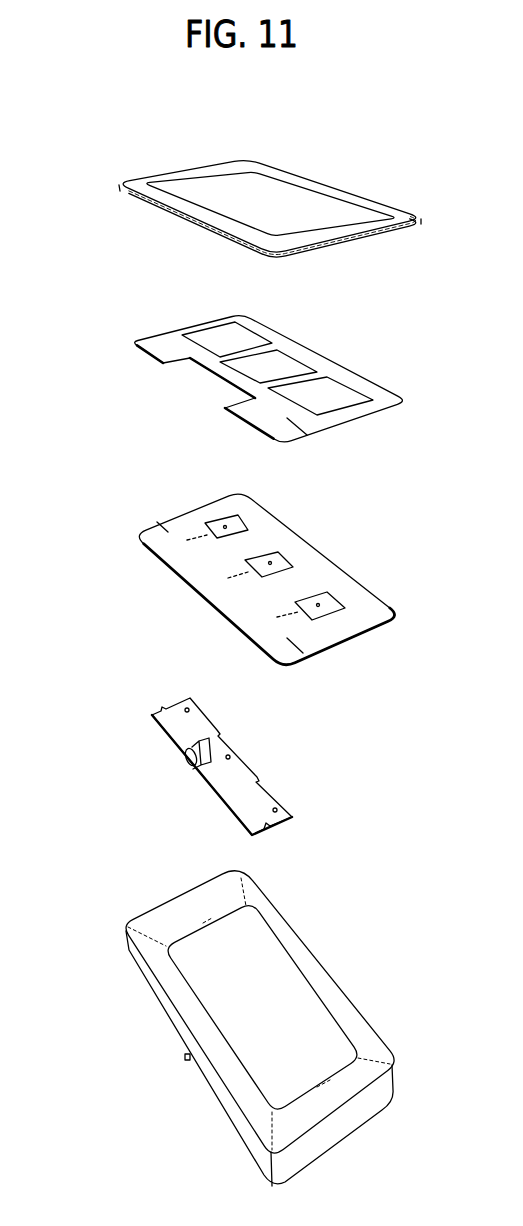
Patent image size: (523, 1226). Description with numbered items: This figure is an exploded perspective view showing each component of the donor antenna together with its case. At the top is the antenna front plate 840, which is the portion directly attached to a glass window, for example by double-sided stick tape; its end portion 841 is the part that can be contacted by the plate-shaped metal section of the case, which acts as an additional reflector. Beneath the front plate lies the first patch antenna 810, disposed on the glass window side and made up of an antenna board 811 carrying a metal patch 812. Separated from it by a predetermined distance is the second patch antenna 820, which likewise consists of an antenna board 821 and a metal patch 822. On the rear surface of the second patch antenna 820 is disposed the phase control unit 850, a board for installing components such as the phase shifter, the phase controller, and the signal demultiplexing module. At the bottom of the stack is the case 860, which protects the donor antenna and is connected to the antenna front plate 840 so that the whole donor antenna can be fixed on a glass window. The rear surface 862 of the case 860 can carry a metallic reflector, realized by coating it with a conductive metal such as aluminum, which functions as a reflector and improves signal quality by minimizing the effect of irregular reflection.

The antenna front plate 840 is at (284, 183).
The end portion of the antenna front plate 841 is at (185, 173).
The first patch antenna 810 is at (255, 365).
The antenna board 811 is at (152, 335).
The metal patch 812 is at (260, 367).
The second patch antenna 820 is at (255, 571).
The antenna board 821 is at (178, 550).
The metal patch 822 is at (282, 558).
The phase control unit 850 is at (258, 756).
The case 860 is at (222, 1028).
The rear surface of the case 862 is at (272, 978).